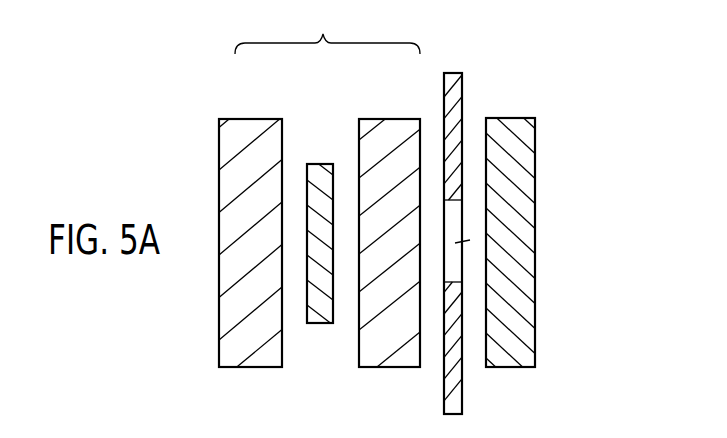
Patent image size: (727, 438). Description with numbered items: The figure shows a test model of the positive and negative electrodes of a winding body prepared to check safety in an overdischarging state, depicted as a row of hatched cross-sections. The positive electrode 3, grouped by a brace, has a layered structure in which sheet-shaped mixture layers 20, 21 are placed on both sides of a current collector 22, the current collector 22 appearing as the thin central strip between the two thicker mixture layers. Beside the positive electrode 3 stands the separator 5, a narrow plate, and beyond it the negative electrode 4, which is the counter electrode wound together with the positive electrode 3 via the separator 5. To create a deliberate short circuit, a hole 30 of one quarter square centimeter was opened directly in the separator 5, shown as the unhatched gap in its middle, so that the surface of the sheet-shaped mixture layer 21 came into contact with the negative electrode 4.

The positive electrode 3 is at (323, 32).
The sheet-shaped mixture layer 20 is at (249, 128).
The sheet-shaped mixture layer 21 is at (384, 128).
The current collector 22 is at (318, 172).
The separator 5 is at (462, 97).
The hole 30 is at (455, 243).
The negative electrode 4 is at (533, 173).